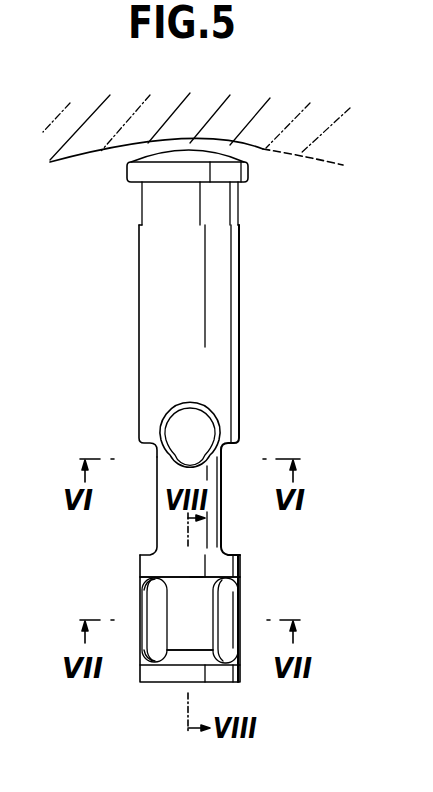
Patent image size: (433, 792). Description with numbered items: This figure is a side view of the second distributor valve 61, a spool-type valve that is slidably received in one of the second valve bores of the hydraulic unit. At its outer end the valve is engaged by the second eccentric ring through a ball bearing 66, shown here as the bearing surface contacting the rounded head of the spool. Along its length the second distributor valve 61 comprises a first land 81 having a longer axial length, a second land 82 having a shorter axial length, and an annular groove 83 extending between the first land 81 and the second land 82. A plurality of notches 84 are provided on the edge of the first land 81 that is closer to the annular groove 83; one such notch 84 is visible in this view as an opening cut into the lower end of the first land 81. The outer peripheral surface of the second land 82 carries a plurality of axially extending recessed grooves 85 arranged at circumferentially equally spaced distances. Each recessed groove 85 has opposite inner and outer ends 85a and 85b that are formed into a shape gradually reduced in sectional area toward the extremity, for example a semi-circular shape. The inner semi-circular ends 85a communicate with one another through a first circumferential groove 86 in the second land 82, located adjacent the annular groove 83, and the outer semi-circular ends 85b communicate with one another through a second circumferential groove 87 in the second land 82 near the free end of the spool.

The second distributor valve 61 is at (244, 331).
The ball bearing 66 is at (288, 152).
The first land 81 is at (147, 304).
The second land 82 is at (150, 568).
The annular groove 83 is at (157, 515).
The notch 84 is at (190, 406).
The recessed groove 85 is at (155, 613).
The inner end of recessed groove 85a is at (140, 587).
The outer end of recessed groove 85b is at (147, 653).
The first circumferential groove 86 is at (240, 568).
The second circumferential groove 87 is at (170, 660).